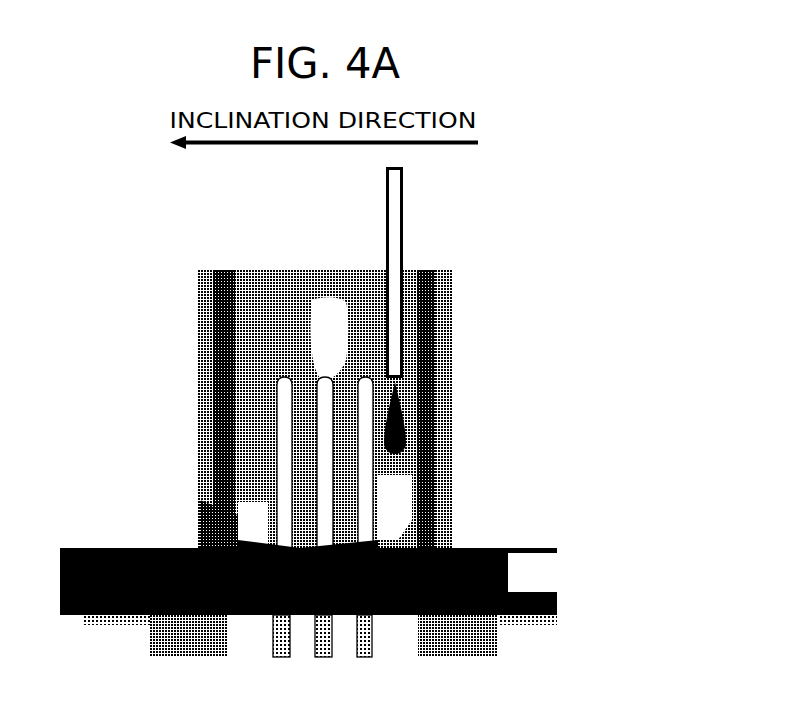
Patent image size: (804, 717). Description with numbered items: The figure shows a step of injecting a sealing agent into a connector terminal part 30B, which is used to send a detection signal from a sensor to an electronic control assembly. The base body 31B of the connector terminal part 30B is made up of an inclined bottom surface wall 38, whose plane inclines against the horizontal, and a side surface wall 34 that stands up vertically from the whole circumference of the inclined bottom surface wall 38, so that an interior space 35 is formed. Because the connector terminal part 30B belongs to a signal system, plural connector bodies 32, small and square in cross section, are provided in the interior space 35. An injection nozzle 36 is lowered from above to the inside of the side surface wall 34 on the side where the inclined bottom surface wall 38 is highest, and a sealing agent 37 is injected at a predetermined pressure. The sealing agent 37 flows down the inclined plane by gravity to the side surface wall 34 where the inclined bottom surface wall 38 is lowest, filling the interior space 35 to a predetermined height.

The connector terminal part 30B is at (152, 528).
The base body 31B is at (437, 540).
The connector bodies 32 is at (289, 377).
The side surface wall 34 is at (432, 335).
The interior space 35 is at (260, 340).
The injection nozzle 36 is at (403, 212).
The sealing agent 37 is at (400, 422).
The inclined bottom surface wall 38 is at (300, 548).